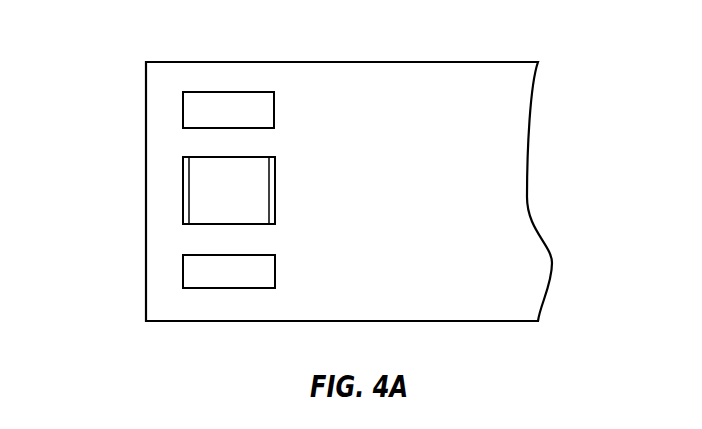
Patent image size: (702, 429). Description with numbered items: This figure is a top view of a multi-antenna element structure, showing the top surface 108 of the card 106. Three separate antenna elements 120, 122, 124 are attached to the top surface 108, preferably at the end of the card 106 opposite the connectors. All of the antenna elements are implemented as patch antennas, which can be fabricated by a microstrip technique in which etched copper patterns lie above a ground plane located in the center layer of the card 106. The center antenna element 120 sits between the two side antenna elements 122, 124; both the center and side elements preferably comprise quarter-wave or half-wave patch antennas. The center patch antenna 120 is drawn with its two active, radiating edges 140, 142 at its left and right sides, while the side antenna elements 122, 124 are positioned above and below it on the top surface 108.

The card 106 is at (238, 61).
The top surface 108 is at (438, 74).
The antenna element 120 is at (253, 179).
The antenna element 122 is at (268, 110).
The antenna element 124 is at (267, 272).
The active edge 140 is at (183, 204).
The active edge 142 is at (275, 202).